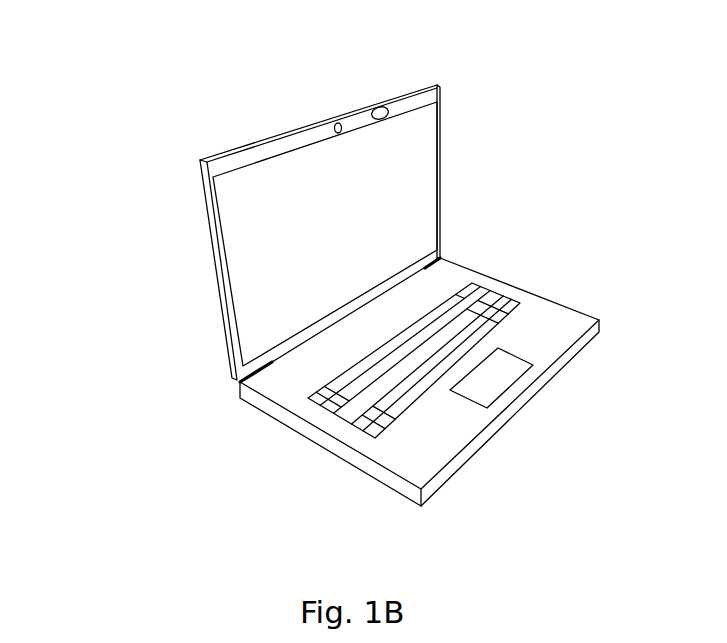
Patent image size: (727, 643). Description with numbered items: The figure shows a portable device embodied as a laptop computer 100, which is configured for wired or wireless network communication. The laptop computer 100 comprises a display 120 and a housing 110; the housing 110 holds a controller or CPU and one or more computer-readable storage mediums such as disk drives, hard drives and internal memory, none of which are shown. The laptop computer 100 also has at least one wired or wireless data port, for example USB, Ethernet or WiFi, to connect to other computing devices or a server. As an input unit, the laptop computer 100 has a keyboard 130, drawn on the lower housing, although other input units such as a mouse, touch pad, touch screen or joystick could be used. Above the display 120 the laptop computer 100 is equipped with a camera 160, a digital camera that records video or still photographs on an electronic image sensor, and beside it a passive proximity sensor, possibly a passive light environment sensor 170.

The laptop computer 100 is at (267, 139).
The housing 110 is at (199, 160).
The display 120 is at (236, 244).
The keyboard 130 is at (332, 408).
The camera 160 is at (338, 122).
The passive light environment sensor 170 is at (387, 107).